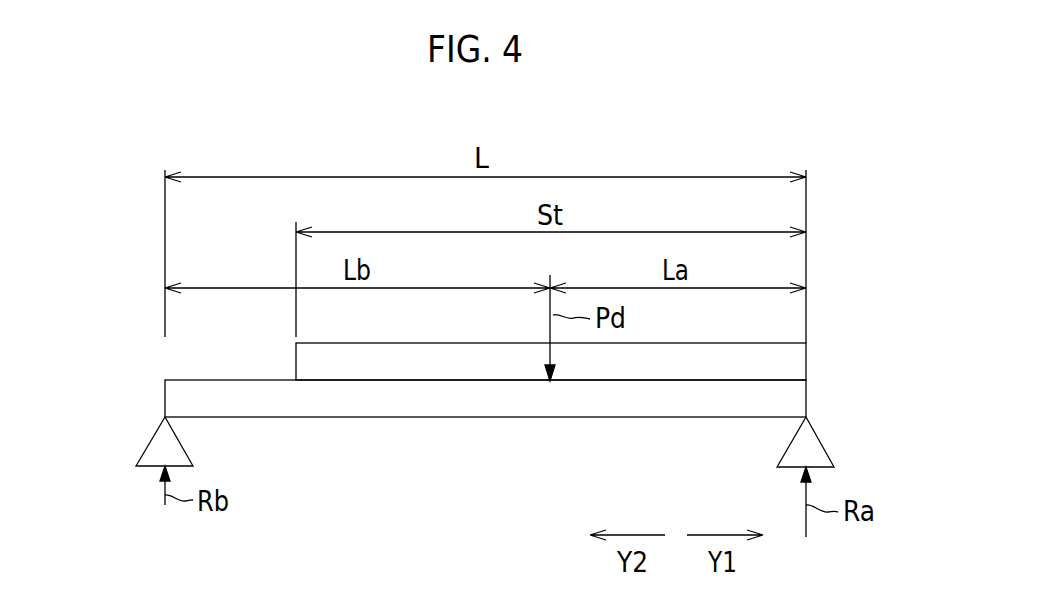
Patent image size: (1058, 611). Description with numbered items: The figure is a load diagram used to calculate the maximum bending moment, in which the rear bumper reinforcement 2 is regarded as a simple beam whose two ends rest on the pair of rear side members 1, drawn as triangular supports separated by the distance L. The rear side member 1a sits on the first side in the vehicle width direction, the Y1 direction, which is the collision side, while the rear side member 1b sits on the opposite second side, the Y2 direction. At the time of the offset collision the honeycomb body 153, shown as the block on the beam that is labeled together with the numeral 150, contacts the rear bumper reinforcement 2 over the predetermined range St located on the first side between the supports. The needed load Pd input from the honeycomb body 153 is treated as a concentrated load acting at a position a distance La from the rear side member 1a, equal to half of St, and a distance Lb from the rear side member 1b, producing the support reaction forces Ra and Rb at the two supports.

The rear bumper reinforcement 2 is at (488, 410).
The honeycomb body 153 is at (795, 363).
The stage unit 150 is at (624, 354).
The rear side member 1 is at (484, 439).
The rear side member on the first side 1a is at (812, 448).
The rear side member on the second side 1b is at (160, 447).